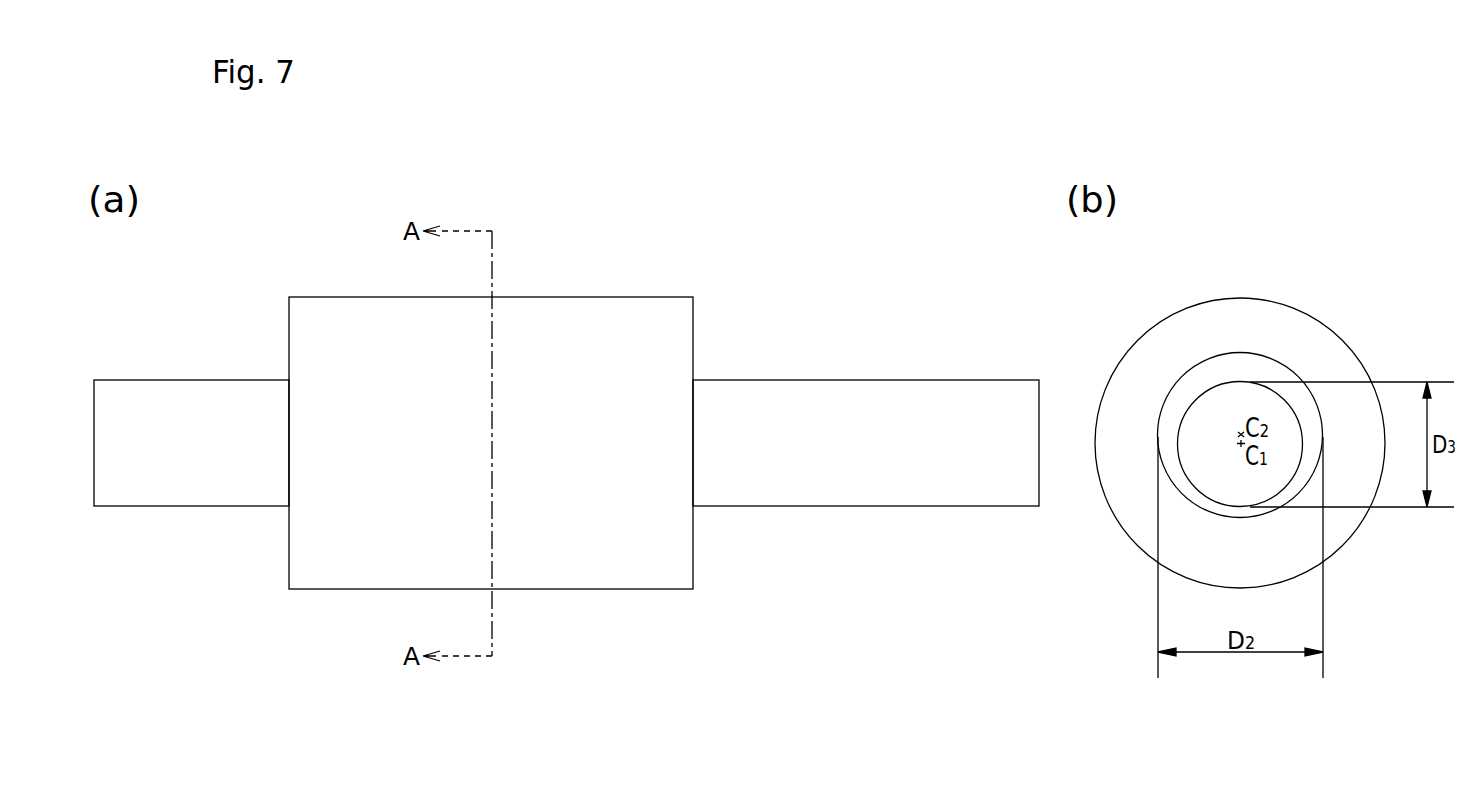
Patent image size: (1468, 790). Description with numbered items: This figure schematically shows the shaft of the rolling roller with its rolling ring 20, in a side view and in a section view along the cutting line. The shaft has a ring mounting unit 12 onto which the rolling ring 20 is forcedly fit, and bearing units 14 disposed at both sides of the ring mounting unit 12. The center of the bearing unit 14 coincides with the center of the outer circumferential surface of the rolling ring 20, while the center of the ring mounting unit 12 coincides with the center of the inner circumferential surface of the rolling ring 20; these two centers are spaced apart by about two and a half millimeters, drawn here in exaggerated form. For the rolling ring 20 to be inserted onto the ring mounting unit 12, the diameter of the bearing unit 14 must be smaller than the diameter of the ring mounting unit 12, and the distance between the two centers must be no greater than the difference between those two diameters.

The ring mounting unit 12 is at (1208, 373).
The bearing unit 14 is at (164, 410).
The rolling ring 20 is at (599, 340).